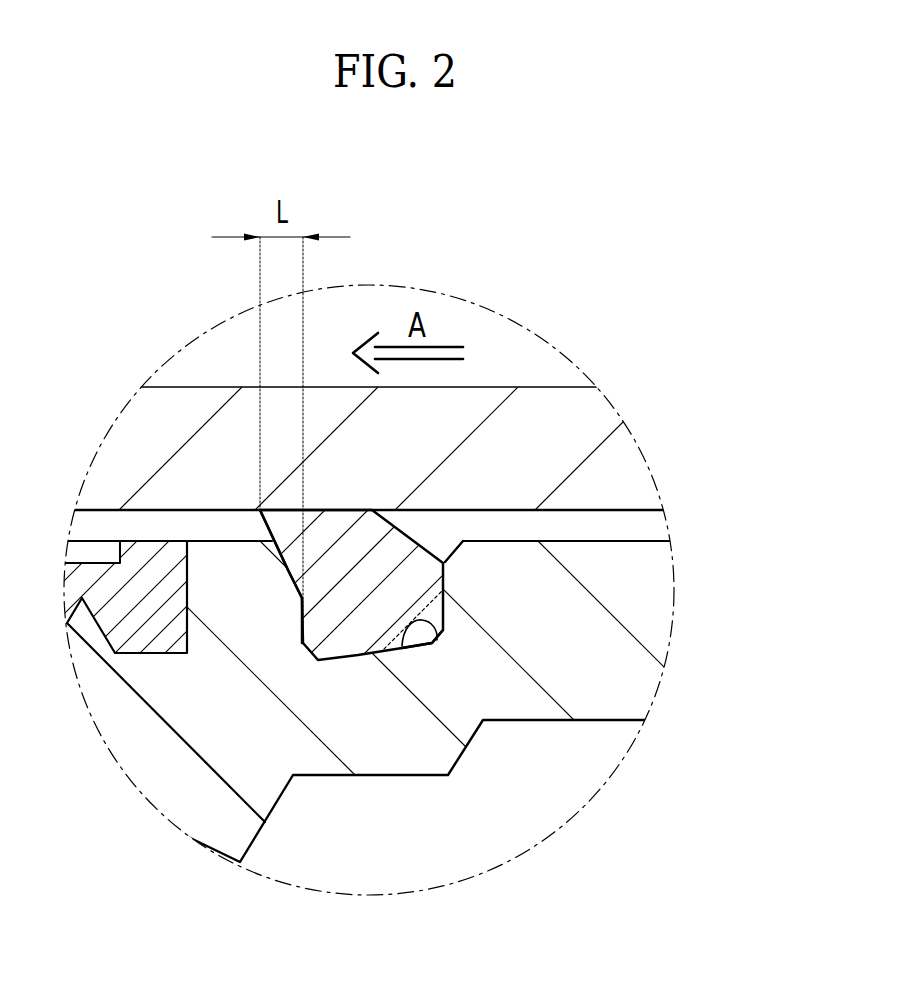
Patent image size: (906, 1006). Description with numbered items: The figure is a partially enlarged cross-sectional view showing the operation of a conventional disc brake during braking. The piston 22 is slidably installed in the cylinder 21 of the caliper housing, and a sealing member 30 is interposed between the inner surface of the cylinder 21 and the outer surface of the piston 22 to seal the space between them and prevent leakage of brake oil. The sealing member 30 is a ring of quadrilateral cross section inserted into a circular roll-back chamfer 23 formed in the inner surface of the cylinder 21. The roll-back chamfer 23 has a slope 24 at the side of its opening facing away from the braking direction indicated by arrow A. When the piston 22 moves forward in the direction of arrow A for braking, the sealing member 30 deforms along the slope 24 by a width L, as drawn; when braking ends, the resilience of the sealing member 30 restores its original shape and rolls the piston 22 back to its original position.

The cylinder 21 is at (653, 624).
The piston 22 is at (635, 461).
The roll-back chamfer 23 is at (524, 748).
The slope 24 is at (197, 690).
The sealing member 30 is at (367, 676).